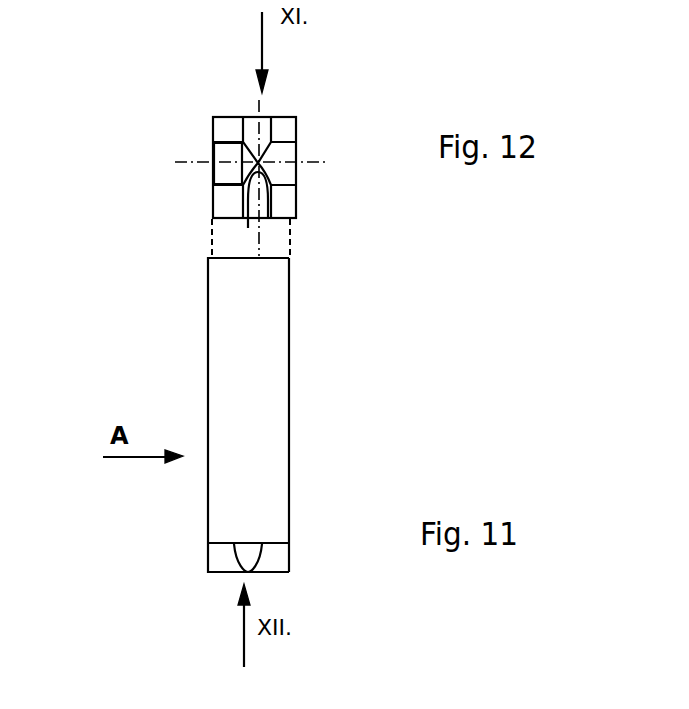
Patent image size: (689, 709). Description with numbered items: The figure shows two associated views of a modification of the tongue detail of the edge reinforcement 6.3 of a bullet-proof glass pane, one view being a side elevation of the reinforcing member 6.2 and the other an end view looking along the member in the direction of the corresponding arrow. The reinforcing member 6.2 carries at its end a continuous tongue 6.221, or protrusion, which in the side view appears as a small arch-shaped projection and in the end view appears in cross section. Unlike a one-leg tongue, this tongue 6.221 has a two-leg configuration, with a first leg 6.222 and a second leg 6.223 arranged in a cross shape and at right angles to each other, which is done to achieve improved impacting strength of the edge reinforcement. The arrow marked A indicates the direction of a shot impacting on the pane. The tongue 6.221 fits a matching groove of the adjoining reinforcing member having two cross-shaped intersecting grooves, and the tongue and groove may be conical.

In FIG. 12, the reinforcing member 6.2 is at (283, 205).
In FIG. 11, the reinforcing member 6.2 is at (275, 411).
In FIG. 11, the edge reinforcement 6.3 is at (275, 336).
In FIG. 12, the tongue 6.221 is at (281, 164).
In FIG. 11, the tongue 6.221 is at (275, 562).
In FIG. 12, the first leg of tongue 6.222 is at (212, 172).
In FIG. 12, the second leg of tongue 6.223 is at (248, 228).